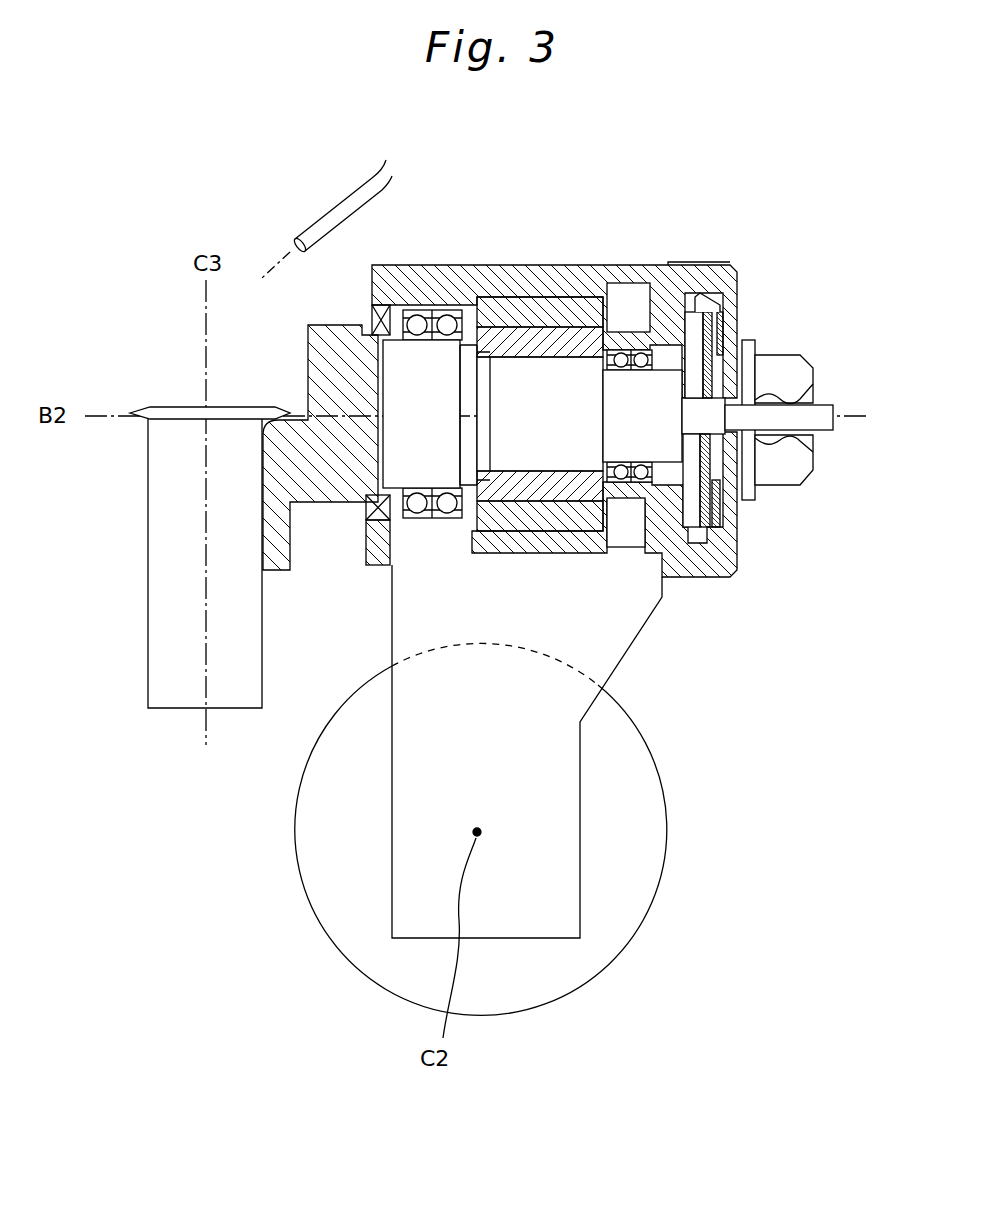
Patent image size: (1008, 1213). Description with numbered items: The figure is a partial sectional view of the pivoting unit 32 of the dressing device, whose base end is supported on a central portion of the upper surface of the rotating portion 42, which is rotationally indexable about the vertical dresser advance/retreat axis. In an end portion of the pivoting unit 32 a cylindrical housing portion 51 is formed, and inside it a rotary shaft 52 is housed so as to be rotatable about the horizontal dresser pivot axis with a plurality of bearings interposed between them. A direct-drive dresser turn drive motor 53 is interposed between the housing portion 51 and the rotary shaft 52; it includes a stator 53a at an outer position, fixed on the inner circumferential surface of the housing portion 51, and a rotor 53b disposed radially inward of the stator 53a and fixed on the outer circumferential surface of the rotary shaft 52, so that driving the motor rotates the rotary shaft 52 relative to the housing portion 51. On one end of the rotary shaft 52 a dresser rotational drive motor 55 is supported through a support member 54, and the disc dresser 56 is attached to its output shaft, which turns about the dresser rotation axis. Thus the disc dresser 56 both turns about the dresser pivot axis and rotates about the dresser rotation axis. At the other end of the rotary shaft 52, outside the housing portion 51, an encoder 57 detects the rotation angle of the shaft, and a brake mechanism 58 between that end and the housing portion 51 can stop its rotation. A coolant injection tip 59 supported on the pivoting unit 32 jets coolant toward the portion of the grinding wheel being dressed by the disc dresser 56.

The pivoting unit 32 is at (638, 642).
The rotating portion 42 is at (664, 837).
The housing portion 51 is at (630, 265).
The rotary shaft 52 is at (835, 405).
The dresser turn drive motor 53 is at (540, 347).
The stator 53a is at (513, 305).
The rotor 53b is at (562, 335).
The support member 54 is at (338, 325).
The dresser rotational drive motor 55 is at (147, 540).
The disc dresser 56 is at (152, 407).
The encoder 57 is at (788, 355).
The brake mechanism 58 is at (698, 312).
The coolant injection tip 59 is at (298, 236).